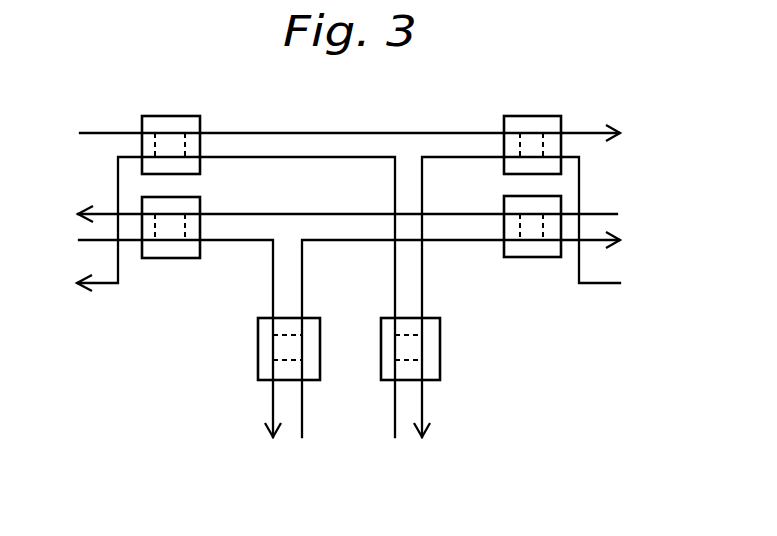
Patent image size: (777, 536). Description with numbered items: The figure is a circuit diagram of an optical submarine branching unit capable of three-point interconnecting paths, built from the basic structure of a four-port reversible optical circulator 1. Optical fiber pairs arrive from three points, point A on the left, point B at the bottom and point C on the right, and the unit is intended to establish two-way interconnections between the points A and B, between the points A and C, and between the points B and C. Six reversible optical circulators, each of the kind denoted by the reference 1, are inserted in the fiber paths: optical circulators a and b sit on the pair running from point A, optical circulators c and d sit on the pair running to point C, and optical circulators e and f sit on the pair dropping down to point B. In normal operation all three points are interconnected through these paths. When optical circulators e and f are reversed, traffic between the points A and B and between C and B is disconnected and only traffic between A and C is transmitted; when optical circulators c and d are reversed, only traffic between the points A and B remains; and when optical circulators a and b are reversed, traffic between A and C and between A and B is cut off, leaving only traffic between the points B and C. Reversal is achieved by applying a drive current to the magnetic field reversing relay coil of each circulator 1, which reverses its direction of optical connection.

The four-port reversible optical circulator 1 is at (381, 227).
The optical circulator a is at (171, 129).
The optical circulator b is at (171, 246).
The optical circulator c is at (532, 128).
The optical circulator d is at (532, 245).
The optical circulator e is at (275, 349).
The optical circulator f is at (402, 349).
The point A is at (52, 236).
The point B is at (347, 457).
The point C is at (656, 186).